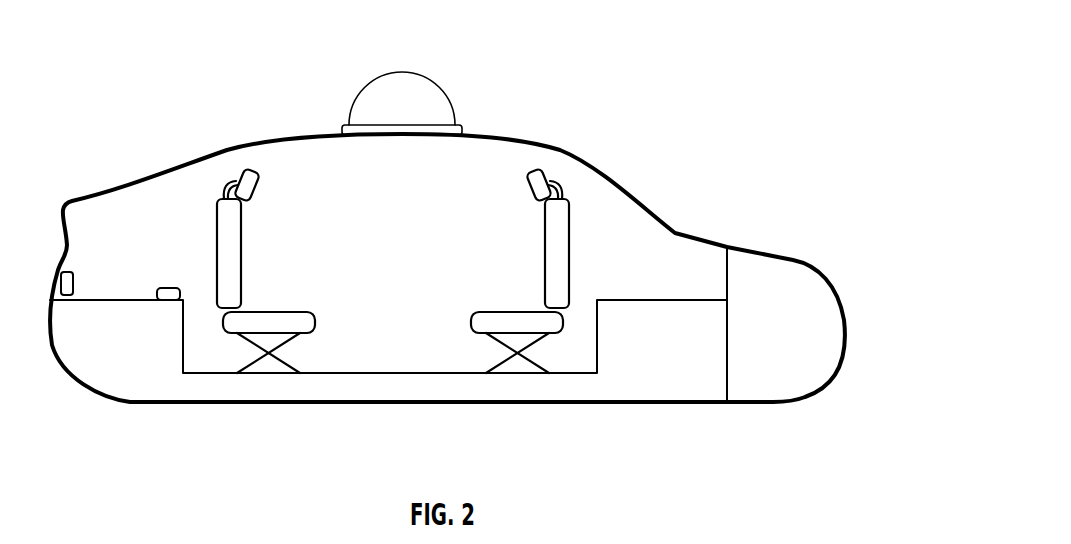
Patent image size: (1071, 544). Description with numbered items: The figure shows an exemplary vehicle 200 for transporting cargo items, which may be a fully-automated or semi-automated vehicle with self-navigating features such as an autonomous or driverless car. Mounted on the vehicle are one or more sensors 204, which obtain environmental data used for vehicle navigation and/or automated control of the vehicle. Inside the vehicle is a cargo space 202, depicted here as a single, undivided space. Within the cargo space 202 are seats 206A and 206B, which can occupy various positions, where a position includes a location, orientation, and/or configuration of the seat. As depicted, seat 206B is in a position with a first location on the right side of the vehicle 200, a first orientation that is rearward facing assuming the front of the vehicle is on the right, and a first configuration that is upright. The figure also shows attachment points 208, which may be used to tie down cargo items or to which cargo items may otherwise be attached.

The vehicle 200 is at (671, 58).
The cargo space 202 is at (648, 227).
The sensors 204 is at (436, 82).
The seat 206A is at (272, 312).
The seat 206B is at (516, 312).
The attachment points 208 is at (75, 270).